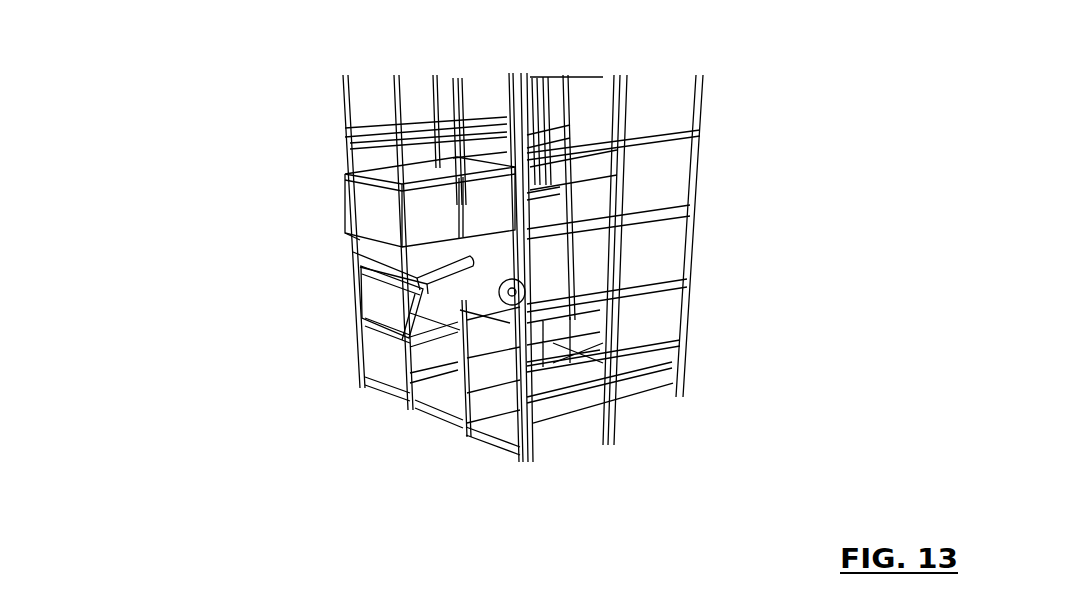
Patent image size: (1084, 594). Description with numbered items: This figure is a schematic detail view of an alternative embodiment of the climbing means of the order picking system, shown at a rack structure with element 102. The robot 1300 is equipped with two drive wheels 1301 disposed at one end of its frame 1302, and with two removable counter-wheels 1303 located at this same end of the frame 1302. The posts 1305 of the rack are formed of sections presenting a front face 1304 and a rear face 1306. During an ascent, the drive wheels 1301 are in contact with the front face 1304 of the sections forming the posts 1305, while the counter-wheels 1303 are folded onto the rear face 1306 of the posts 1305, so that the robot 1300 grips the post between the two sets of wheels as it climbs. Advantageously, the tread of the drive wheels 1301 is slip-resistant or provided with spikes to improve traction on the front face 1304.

The tote container 102 is at (362, 210).
The robot 1300 is at (387, 292).
The drive wheels 1301 is at (515, 294).
The frame 1302 is at (407, 320).
The removable counter-wheels 1303 is at (527, 268).
The front face 1304 is at (521, 190).
The posts 1305 is at (457, 151).
The rear face 1306 is at (527, 309).